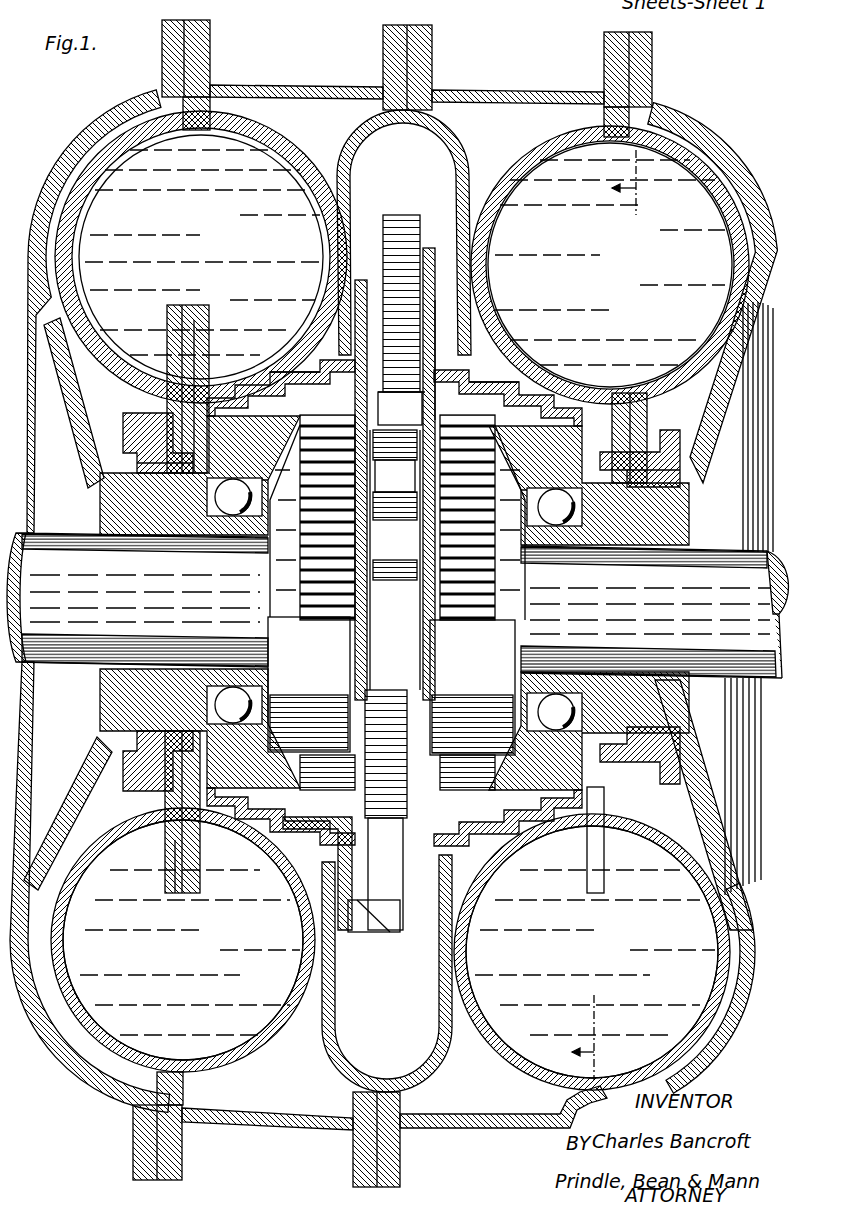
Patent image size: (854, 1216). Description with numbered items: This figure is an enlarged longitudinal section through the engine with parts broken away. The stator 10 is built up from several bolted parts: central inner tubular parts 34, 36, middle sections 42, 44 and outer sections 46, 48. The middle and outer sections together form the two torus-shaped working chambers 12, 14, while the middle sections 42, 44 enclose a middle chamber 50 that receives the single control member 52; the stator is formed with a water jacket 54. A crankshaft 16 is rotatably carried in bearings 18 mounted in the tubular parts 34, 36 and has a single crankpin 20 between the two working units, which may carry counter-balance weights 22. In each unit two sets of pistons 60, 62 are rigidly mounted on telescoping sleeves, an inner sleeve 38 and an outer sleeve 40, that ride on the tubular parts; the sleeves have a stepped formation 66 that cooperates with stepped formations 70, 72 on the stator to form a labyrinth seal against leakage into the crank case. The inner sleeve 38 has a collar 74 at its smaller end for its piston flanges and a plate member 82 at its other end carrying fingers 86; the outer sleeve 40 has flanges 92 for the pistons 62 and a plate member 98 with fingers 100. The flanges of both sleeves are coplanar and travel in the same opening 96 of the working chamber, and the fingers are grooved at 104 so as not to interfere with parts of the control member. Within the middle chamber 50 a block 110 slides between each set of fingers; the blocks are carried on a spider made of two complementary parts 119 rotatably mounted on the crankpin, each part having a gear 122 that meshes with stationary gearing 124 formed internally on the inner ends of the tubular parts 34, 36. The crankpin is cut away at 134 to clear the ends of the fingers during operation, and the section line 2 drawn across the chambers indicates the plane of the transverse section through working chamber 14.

The section line 2- 2 is at (608, 615).
The stator 10 is at (452, 84).
The working chamber 12 is at (256, 137).
The working chamber 14 is at (690, 146).
The crankshaft 16 is at (58, 640).
The bearings 18 is at (550, 527).
The crankpin 20 is at (398, 552).
The counter-balance weights 22 is at (391, 686).
The central inner tubular part 34 is at (135, 507).
The central inner tubular part 36 is at (650, 523).
The inner sleeve 38 is at (143, 463).
The outer sleeve 40 is at (140, 447).
The middle section 42 is at (318, 86).
The middle section 44 is at (552, 92).
The outer section 46 is at (163, 62).
The outer section 48 is at (654, 72).
The middle chamber 50 is at (404, 232).
The single control member 52 is at (430, 248).
The water jacket 54 is at (88, 135).
The pistons 60 is at (700, 992).
The pistons 62 is at (297, 198).
The stepped formation 66 is at (273, 390).
The stepped formation 70 is at (394, 462).
The stepped formation 72 is at (265, 382).
The collar 74 is at (350, 835).
The plate member 82 is at (360, 280).
The finger 86 is at (400, 407).
The flanges 92 is at (182, 890).
The opening 96 is at (215, 370).
The plate member 98 is at (340, 930).
The fingers 100 is at (390, 905).
The groove 104 is at (375, 932).
The block 110 is at (400, 215).
The complementary part 119 is at (435, 305).
The gear 122 is at (315, 552).
The stationary gearing 124 is at (397, 772).
The cut away 134 is at (395, 461).